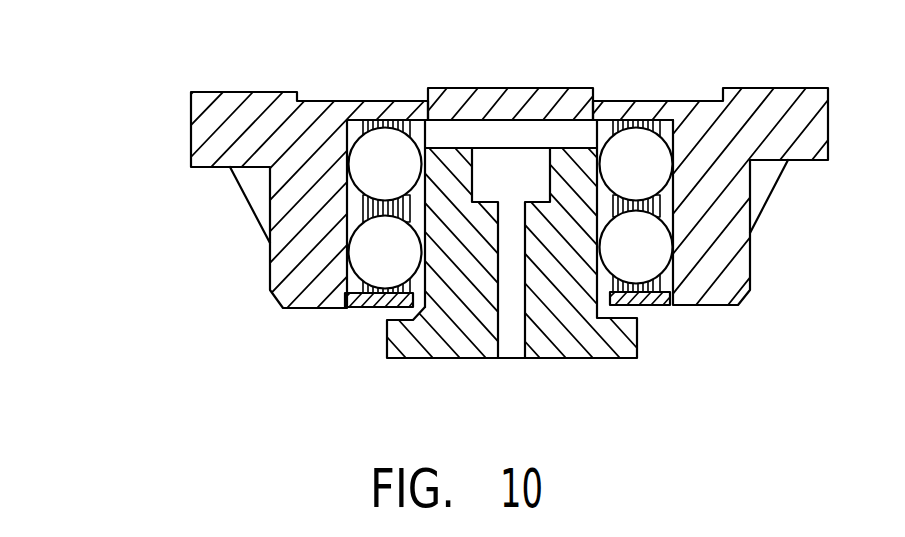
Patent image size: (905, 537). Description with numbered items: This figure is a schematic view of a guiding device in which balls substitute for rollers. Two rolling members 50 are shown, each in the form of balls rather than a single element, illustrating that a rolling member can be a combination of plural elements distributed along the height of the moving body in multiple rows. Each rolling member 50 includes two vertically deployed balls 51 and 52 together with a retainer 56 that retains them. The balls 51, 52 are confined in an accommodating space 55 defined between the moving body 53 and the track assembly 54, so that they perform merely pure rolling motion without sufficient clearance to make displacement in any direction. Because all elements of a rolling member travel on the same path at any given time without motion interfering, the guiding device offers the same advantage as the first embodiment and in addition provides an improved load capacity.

The rolling member 50 is at (118, 183).
The ball 51 is at (387, 178).
The ball 52 is at (387, 255).
The moving body 53 is at (425, 112).
The track assembly 54 is at (563, 337).
The accommodating space 55 is at (407, 218).
The retainer 56 is at (397, 296).